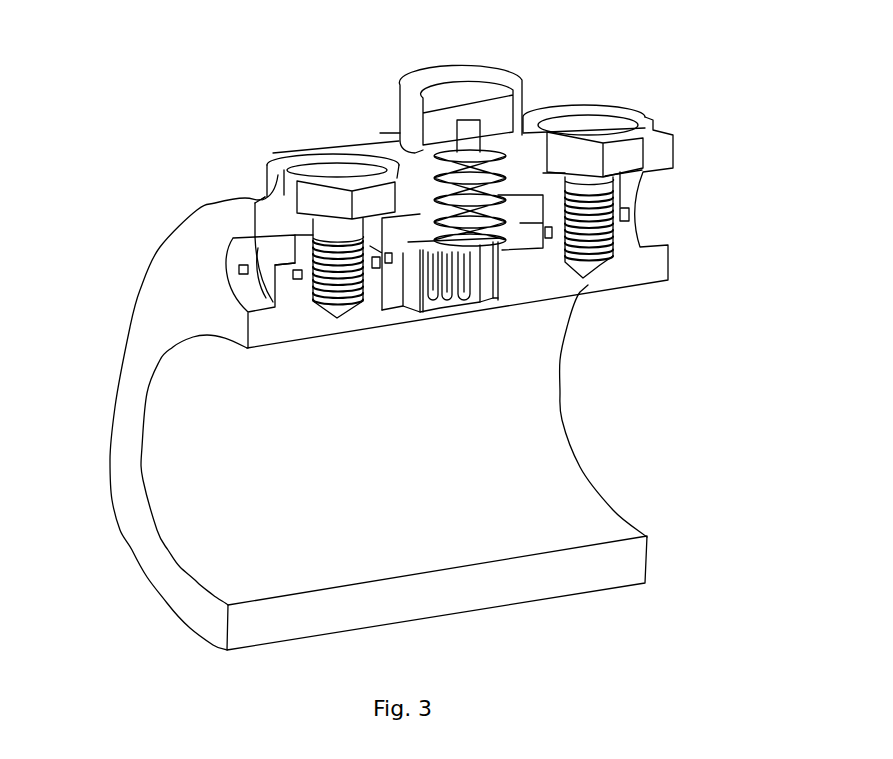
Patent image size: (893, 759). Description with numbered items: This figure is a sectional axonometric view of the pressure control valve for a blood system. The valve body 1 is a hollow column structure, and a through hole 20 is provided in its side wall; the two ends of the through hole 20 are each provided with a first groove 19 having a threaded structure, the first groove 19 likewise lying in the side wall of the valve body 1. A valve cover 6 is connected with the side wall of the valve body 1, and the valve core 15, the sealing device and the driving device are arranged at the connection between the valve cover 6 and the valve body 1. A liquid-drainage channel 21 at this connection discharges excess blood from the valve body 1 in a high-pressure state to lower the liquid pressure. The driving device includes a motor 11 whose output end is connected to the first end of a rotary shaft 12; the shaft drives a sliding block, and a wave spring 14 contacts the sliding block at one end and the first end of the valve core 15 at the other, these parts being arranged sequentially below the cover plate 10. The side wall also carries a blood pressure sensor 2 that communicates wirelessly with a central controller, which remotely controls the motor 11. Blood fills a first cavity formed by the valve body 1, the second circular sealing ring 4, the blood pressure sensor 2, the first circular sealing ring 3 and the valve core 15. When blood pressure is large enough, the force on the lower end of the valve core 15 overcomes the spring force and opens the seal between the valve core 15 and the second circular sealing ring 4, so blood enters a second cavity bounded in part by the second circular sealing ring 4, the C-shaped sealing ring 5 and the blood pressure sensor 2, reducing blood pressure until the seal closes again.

The valve body 1 is at (138, 325).
The blood pressure sensor 2 is at (383, 308).
The first circular sealing ring 3 is at (383, 308).
The second circular sealing ring 4 is at (467, 327).
The C-shaped sealing ring 5 is at (240, 255).
The valve cover 6 is at (228, 258).
The cover plate 10 is at (400, 90).
The motor 11 is at (502, 112).
The rotary shaft 12 is at (481, 138).
The wave spring 14 is at (433, 168).
The valve core 15 is at (570, 288).
The first groove 19 is at (527, 300).
The through hole 20 is at (486, 300).
The liquid-drainage channel 21 is at (248, 292).